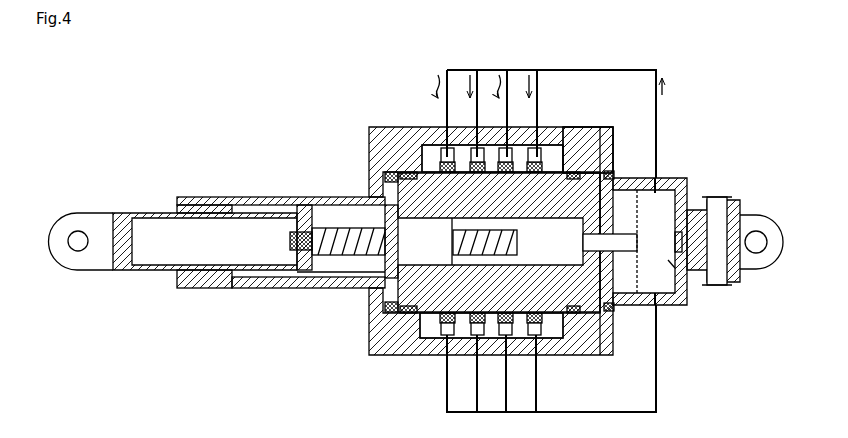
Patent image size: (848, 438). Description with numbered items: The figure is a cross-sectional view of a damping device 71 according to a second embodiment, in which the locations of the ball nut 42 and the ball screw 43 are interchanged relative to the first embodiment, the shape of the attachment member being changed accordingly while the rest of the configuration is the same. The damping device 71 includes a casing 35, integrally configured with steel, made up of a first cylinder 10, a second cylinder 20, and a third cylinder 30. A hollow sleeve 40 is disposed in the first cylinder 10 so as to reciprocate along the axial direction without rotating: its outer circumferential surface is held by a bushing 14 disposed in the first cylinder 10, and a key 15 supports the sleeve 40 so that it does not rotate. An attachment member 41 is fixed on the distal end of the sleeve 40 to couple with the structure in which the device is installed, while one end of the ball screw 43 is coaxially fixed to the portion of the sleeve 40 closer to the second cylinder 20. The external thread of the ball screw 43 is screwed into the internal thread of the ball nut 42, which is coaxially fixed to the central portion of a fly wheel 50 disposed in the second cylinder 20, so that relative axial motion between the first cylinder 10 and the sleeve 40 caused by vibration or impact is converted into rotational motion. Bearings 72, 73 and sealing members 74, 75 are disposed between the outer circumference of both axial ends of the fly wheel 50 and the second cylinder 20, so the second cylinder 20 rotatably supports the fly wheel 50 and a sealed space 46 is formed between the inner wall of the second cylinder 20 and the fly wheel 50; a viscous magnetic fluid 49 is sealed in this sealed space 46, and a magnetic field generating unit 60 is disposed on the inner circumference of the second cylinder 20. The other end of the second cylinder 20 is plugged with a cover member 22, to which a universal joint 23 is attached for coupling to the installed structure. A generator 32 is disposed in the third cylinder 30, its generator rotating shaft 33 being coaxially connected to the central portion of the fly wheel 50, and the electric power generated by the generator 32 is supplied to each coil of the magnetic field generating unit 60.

The first cylinder 10 is at (275, 196).
The bushing 14 is at (203, 207).
The key 15 is at (270, 280).
The second cylinder 20 is at (423, 126).
The cover member 22 is at (618, 132).
The universal joint 23 is at (760, 210).
The third cylinder 30 is at (682, 173).
The generator 32 is at (674, 268).
The generator rotating shaft 33 is at (630, 233).
The casing 35 is at (365, 135).
The sleeve 40 is at (238, 207).
The attachment member 41 is at (80, 212).
The ball nut 42 is at (410, 228).
The ball screw 43 is at (335, 255).
The sealed space 46 is at (553, 132).
The viscous magnetic fluid 49 is at (588, 150).
The fly wheel 50 is at (512, 160).
The magnetic field generating unit 60 is at (496, 158).
The damping device 71 is at (697, 93).
The bearing 72 is at (390, 176).
The bearing 73 is at (614, 175).
The sealing member 74 is at (408, 172).
The sealing member 75 is at (572, 172).